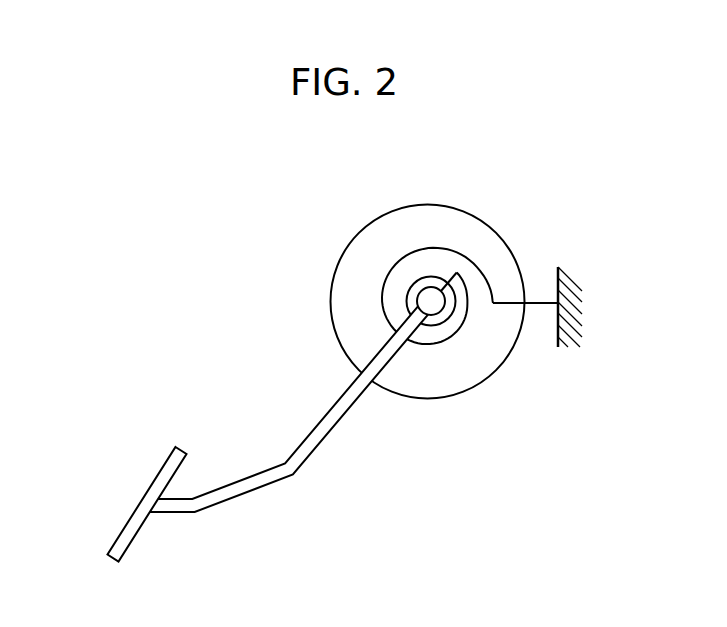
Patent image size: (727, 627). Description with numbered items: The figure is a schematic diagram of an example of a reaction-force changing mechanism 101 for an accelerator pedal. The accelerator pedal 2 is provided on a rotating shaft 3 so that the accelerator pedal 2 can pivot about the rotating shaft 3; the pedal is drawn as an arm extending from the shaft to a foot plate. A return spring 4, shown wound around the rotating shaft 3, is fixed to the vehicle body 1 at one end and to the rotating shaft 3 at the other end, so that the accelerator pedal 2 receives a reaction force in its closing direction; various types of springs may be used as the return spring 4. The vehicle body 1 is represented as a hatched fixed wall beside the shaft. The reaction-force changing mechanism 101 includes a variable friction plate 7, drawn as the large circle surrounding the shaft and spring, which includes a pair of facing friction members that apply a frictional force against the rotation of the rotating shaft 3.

The reaction-force changing mechanism 101 is at (526, 172).
The vehicle body 1 is at (578, 275).
The accelerator pedal 2 is at (114, 515).
The rotating shaft 3 is at (432, 302).
The return spring 4 is at (430, 248).
The variable friction plate 7 is at (336, 243).